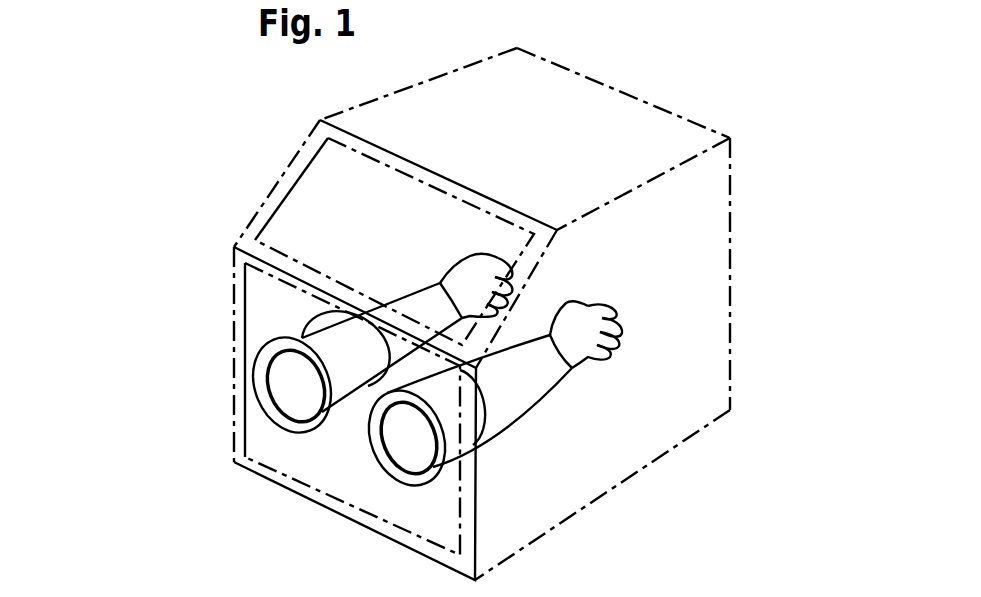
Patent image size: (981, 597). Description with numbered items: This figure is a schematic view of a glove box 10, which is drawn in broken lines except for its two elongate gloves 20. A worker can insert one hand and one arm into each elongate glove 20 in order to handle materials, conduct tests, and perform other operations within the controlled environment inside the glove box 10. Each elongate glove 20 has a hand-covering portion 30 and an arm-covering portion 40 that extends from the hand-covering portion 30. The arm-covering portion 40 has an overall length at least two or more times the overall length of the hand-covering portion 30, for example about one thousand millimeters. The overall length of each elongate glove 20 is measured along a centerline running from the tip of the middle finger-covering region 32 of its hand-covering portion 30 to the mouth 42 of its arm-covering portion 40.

The glove box 10 is at (770, 148).
The elongate glove 20 is at (380, 278).
The hand-covering portion 30 is at (460, 273).
The middle finger-covering region 32 is at (503, 248).
The arm-covering portion 40 is at (300, 338).
The mouth 42 is at (397, 443).